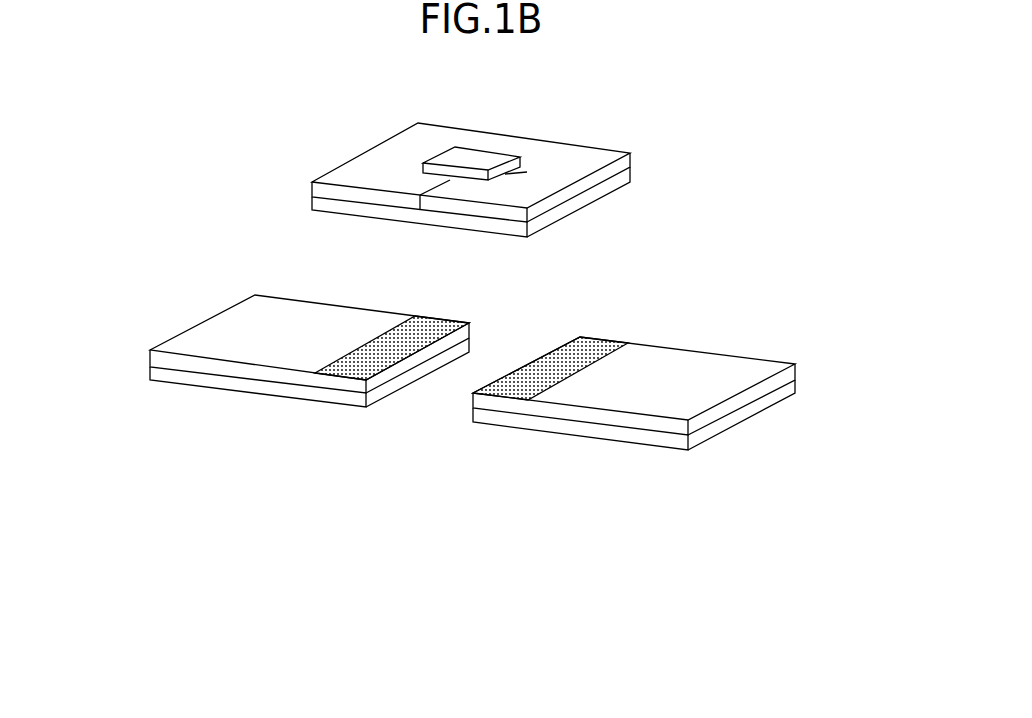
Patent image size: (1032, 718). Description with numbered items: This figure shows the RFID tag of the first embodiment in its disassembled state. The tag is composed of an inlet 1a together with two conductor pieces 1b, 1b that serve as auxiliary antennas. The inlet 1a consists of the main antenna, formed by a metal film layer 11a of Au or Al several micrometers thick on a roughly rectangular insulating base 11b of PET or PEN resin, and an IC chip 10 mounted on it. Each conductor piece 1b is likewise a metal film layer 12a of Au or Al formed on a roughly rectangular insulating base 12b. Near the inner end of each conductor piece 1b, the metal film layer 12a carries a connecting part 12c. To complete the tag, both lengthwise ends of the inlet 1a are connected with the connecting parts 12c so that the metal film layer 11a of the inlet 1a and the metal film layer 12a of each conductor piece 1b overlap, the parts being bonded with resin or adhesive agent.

The inlet 1a is at (472, 165).
The conductor piece 1b is at (467, 388).
The IC chip 10 is at (480, 155).
The metal film layer 11a is at (627, 162).
The base 11b is at (628, 176).
The metal film layer 12a is at (467, 348).
The base 12b is at (150, 372).
The connecting part 12c is at (435, 322).